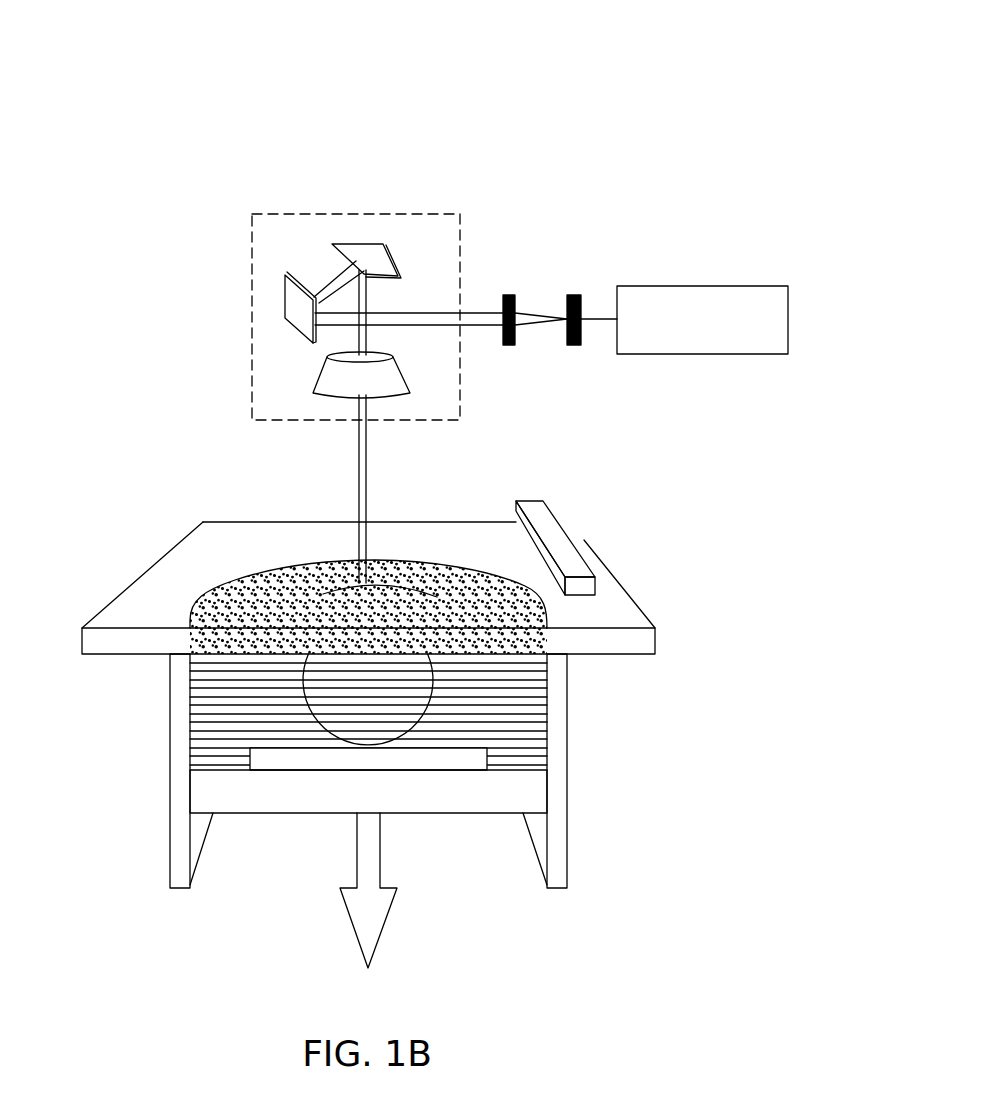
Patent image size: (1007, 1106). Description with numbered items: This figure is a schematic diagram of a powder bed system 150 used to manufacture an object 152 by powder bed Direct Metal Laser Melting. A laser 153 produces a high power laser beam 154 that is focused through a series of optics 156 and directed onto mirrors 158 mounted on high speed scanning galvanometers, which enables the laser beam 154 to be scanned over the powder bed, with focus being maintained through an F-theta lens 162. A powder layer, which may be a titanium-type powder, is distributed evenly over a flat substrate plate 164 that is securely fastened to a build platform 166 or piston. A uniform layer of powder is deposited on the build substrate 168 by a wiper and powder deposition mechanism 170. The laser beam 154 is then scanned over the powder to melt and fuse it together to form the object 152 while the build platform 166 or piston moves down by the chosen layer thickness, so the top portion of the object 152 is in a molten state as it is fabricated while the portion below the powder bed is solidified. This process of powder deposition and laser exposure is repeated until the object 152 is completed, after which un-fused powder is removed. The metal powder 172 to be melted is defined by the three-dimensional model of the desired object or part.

The powder bed system 150 is at (690, 62).
The object 152 is at (341, 579).
The laser 153 is at (703, 285).
The laser beam 154 is at (367, 465).
The optics 156 is at (510, 292).
The mirrors 158 is at (398, 252).
The F-theta lens 162 is at (310, 369).
The substrate plate 164 is at (127, 590).
The build platform 166 is at (457, 824).
The build substrate 168 is at (487, 768).
The wiper and powder deposition mechanism 170 is at (593, 560).
The metal powder 172 is at (202, 716).